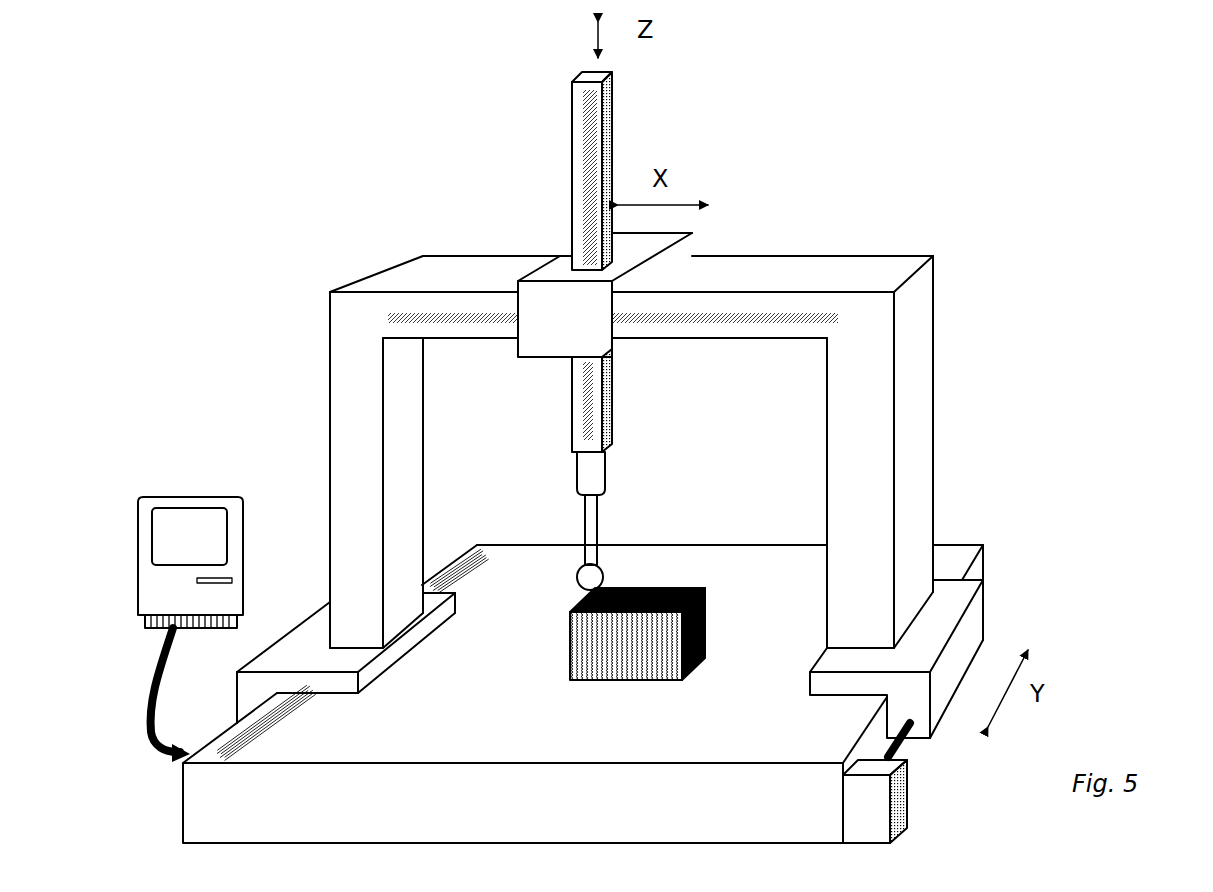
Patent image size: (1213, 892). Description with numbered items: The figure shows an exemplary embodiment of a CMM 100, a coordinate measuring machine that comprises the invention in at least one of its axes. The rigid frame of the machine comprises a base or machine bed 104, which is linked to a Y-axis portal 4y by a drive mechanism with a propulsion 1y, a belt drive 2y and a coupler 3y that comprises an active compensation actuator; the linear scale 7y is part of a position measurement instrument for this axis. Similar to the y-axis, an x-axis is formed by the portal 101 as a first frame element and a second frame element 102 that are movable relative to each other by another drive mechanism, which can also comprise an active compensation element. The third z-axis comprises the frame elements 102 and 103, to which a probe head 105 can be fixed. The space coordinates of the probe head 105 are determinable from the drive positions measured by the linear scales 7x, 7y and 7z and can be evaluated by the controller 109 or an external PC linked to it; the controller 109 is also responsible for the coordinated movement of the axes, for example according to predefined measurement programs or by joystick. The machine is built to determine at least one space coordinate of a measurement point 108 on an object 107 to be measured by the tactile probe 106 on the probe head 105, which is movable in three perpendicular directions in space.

The CMM 100 is at (338, 215).
The portal 101 is at (571, 452).
The second frame element 102 is at (693, 276).
The frame element 103 is at (684, 262).
The machine bed 104 is at (1012, 577).
The probe head 105 is at (678, 456).
The probe 106 is at (682, 519).
The object 107 is at (661, 661).
The measurement point 108 is at (657, 575).
The controller 109 is at (169, 595).
The linear scale 7x is at (713, 275).
The linear scale 7y is at (352, 655).
The linear scale 7z is at (520, 265).
The propulsion 1y is at (927, 807).
The belt drive 2y is at (948, 753).
The coupler 3y is at (953, 659).
The portal 4y is at (939, 452).